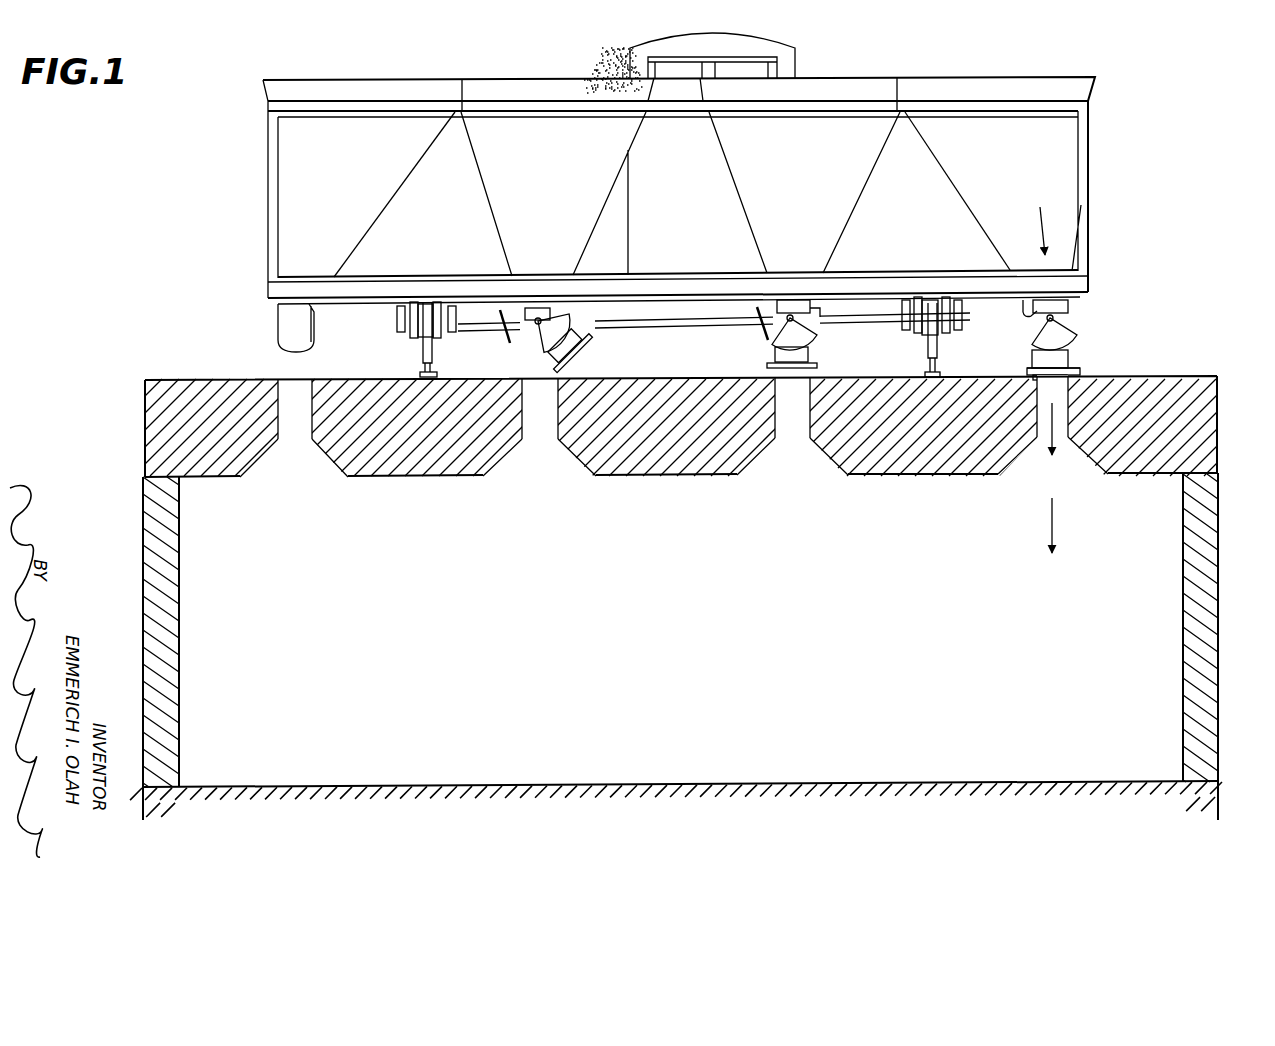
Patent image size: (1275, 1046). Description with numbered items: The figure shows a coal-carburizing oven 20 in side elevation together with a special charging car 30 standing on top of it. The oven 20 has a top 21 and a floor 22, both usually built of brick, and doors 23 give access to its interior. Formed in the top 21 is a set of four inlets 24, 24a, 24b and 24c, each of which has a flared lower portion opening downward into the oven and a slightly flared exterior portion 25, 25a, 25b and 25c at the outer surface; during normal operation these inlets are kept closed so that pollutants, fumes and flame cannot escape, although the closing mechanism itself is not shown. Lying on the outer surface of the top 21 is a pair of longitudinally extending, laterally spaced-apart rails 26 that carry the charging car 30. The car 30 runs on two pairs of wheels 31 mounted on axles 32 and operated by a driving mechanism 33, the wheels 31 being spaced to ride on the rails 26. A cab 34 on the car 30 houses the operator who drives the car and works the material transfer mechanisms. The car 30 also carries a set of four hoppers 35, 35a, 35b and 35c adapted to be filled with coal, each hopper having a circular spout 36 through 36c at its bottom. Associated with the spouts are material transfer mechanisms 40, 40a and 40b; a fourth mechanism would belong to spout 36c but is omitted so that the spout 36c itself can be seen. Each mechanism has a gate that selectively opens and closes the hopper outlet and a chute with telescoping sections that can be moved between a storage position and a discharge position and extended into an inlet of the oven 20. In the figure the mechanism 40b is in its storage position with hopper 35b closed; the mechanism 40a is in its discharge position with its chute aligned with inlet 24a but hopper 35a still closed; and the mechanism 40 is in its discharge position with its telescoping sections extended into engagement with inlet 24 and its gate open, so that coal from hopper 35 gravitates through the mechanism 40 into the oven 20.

The oven 20 is at (1226, 437).
The top 21 is at (1182, 377).
The floor 22 is at (952, 715).
The doors 23 is at (165, 562).
The inlet 24 is at (1037, 455).
The inlet 24a is at (793, 455).
The inlet 24b is at (537, 455).
The inlet 24c is at (300, 460).
The flared exterior portion 25 is at (1123, 402).
The flared exterior portion 25a is at (755, 395).
The flared exterior portion 25b is at (527, 377).
The flared exterior portion 25c is at (278, 378).
The rails 26 is at (420, 372).
The charging car 30 is at (498, 63).
The wheels 31 is at (425, 345).
The axles 32 is at (686, 321).
The driving mechanism 33 is at (400, 313).
The cab 34 is at (780, 55).
The hopper 35 is at (1019, 167).
The hopper 35a is at (809, 167).
The hopper 35b is at (559, 167).
The hopper 35c is at (329, 167).
The spout 36 is at (1068, 306).
The spout 36c is at (285, 337).
The material transfer mechanism 40 is at (1090, 343).
The material transfer mechanism 40a is at (755, 348).
The material transfer mechanism 40b is at (599, 350).